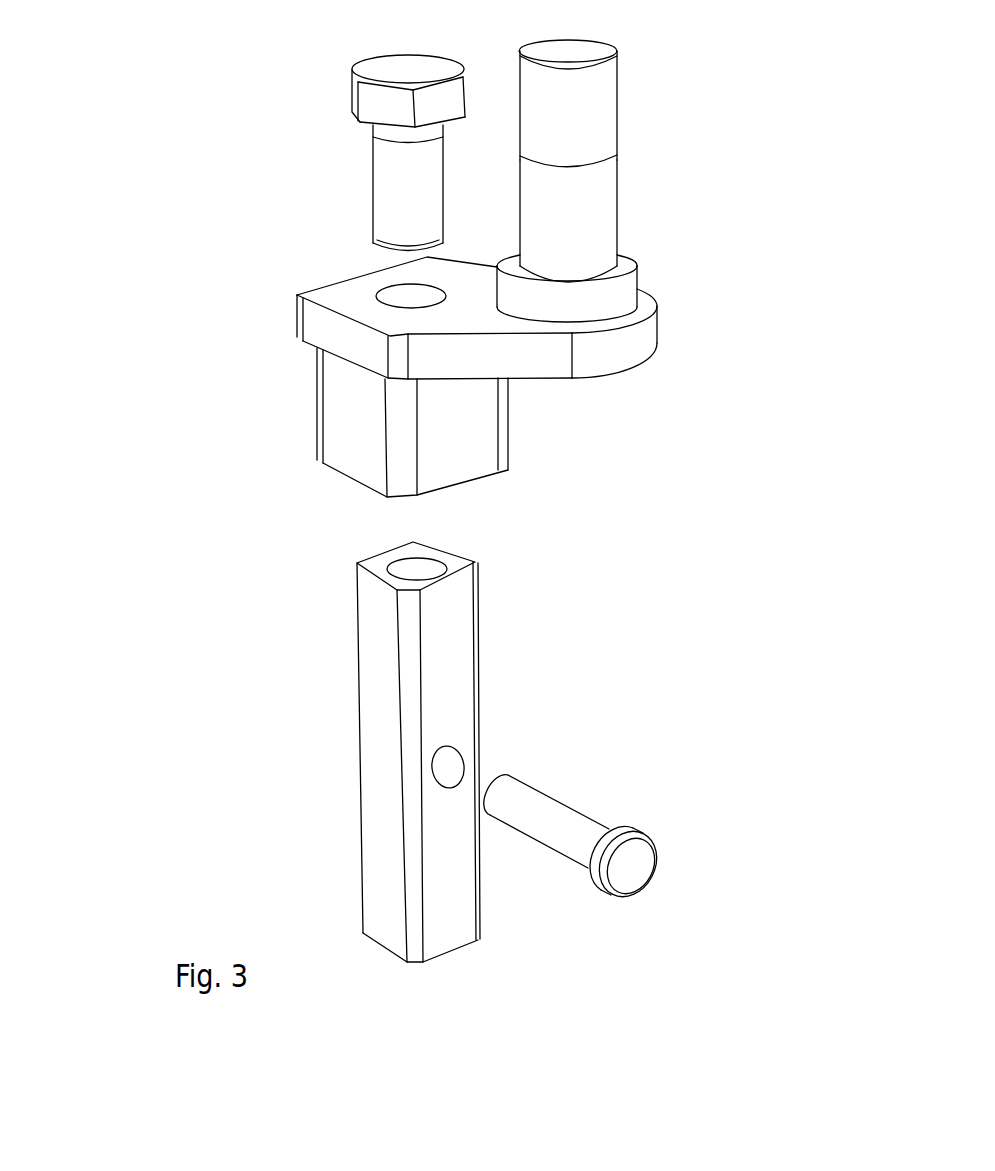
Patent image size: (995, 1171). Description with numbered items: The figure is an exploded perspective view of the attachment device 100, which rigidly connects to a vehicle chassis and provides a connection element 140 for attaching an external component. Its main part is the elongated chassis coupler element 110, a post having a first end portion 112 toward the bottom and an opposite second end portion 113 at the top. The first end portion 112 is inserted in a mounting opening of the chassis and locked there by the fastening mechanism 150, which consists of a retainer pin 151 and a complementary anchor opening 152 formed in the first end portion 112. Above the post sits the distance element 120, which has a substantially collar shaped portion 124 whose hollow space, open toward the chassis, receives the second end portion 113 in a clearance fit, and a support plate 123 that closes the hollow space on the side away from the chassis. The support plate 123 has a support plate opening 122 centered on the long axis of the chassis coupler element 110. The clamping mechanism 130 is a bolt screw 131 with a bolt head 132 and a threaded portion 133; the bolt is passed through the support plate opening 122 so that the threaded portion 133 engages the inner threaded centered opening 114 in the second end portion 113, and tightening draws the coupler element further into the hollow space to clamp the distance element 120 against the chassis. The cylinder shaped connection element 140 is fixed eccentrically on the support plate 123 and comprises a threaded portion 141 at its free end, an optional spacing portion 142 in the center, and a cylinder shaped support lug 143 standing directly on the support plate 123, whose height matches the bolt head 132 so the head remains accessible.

The attachment device 100 is at (752, 128).
The chassis coupler element 110 is at (325, 775).
The first end portion 112 is at (440, 922).
The second end portion 113 is at (453, 626).
The inner threaded centered opening 114 is at (422, 567).
The distance element 120 is at (245, 403).
The support plate opening 122 is at (400, 297).
The support plate 123 is at (590, 363).
The collar shaped portion 124 is at (350, 438).
The clamping mechanism 130 is at (150, 63).
The bolt screw 131 is at (368, 155).
The bolt head 132 is at (402, 68).
The threaded portion 133 is at (388, 212).
The connection element 140 is at (652, 62).
The threaded portion 141 is at (597, 128).
The spacing portion 142 is at (588, 227).
The support lug 143 is at (622, 293).
The fastening mechanism 150 is at (627, 737).
The retainer pin 151 is at (558, 818).
The anchor opening 152 is at (453, 760).